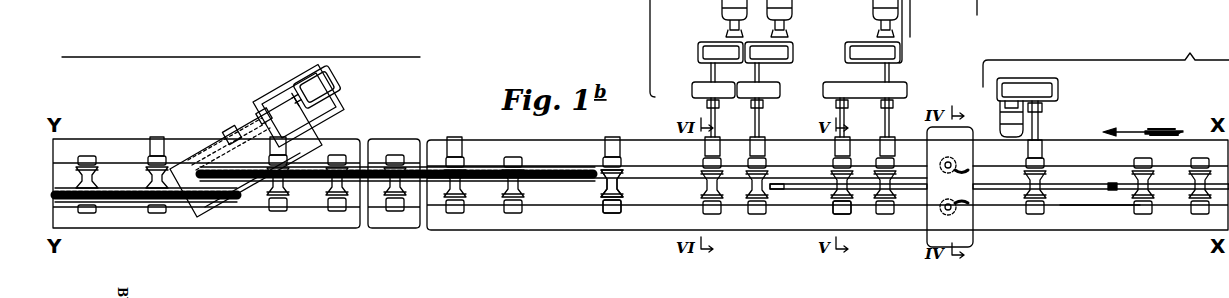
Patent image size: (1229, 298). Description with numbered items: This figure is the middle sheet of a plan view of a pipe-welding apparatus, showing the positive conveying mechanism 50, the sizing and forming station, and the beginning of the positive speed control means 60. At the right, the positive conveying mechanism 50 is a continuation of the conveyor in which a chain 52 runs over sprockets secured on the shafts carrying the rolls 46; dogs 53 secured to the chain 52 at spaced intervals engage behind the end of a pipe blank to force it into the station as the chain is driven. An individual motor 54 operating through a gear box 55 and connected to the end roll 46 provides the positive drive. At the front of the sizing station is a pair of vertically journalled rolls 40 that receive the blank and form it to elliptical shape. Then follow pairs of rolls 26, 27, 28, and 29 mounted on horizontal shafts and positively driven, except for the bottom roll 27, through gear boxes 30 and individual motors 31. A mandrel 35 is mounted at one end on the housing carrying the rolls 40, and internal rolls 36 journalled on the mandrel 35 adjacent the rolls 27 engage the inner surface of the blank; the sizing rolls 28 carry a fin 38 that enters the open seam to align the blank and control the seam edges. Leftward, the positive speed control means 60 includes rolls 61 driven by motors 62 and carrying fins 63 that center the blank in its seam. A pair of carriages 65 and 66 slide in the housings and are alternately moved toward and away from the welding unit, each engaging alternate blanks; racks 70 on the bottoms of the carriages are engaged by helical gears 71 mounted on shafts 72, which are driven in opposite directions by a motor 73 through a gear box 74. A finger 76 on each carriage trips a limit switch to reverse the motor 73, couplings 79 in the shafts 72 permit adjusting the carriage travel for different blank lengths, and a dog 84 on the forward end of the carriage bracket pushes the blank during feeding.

The positive speed control means 60 is at (398, 55).
The helical gears 71 is at (195, 175).
The finger 76 is at (186, 175).
The shafts 72 is at (212, 175).
The couplings 79 is at (228, 165).
The dog 84 is at (167, 140).
The motor 73 is at (318, 86).
The gear box 74 is at (298, 131).
The carriage 65 is at (113, 205).
The racks 70 is at (130, 210).
The carriage 66 is at (488, 168).
The motors 62 is at (614, 142).
The rolls 61 is at (603, 194).
The fins 63 is at (623, 190).
The rolls 29 is at (708, 191).
The fin 38 is at (746, 186).
The mandrel 35 is at (788, 183).
The internal rolls 36 is at (835, 182).
The sizing rolls 28 is at (771, 190).
The bottom roll 27 is at (824, 200).
The rolls 26 is at (897, 200).
The vertically journalled rolls 40 is at (970, 189).
The motors 31 is at (786, 13).
The gear boxes 30 is at (846, 50).
The gear box 55 is at (1052, 91).
The motor 54 is at (1042, 126).
The positive conveying mechanism 50 is at (1196, 82).
The dogs 53 is at (1112, 184).
The rolls 46 is at (1046, 197).
The chain 52 is at (1095, 192).